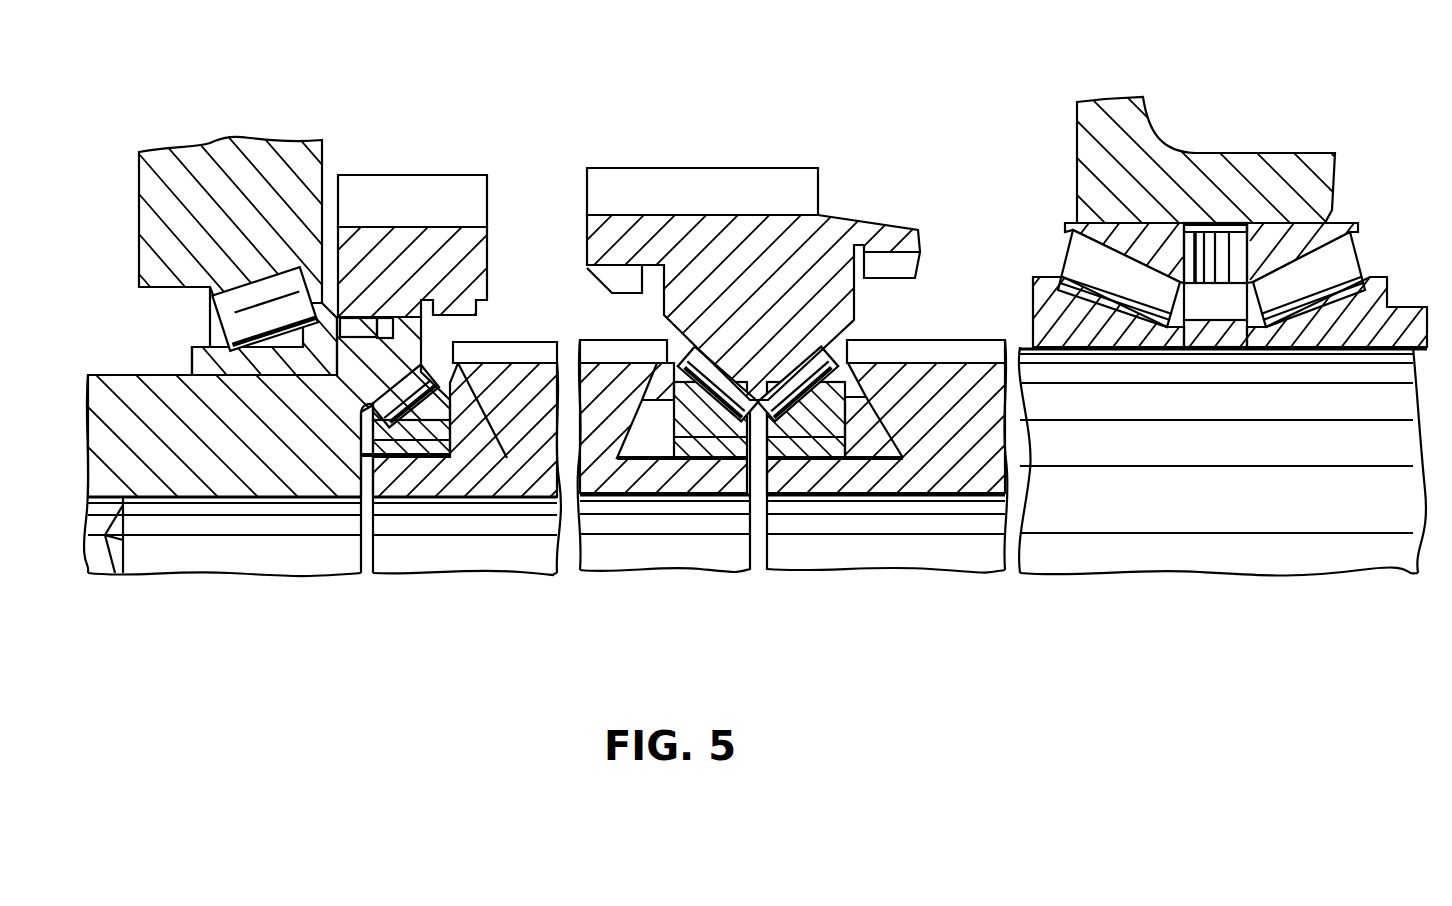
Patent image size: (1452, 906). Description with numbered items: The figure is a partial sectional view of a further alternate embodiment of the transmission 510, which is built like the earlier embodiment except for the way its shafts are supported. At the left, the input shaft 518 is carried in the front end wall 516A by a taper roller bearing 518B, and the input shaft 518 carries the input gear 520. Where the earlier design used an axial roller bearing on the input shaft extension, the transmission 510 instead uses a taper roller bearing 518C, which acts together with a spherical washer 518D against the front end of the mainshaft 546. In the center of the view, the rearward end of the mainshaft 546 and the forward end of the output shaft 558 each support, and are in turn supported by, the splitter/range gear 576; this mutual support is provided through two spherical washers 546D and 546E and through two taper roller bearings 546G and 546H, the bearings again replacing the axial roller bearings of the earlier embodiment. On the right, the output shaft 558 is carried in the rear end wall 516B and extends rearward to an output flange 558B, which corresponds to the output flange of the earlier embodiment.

The transmission 510 is at (158, 132).
The outer housing member 516A is at (199, 172).
The tapered roller 518B is at (233, 308).
The housing block 520 is at (413, 197).
The taper roller bearing 518C is at (423, 382).
The base member 518 is at (245, 478).
The slot 518D is at (390, 478).
The mainshaft 546 is at (508, 480).
The spherical washer 546D is at (728, 447).
The spherical washer 546E is at (830, 455).
The taper roller bearing 546G is at (714, 370).
The taper roller bearing 546H is at (804, 370).
The splitter/range gear 576 is at (718, 180).
The outer housing member 516B is at (1125, 130).
The roller retainer 558B is at (1370, 250).
The output shaft 558 is at (1200, 432).